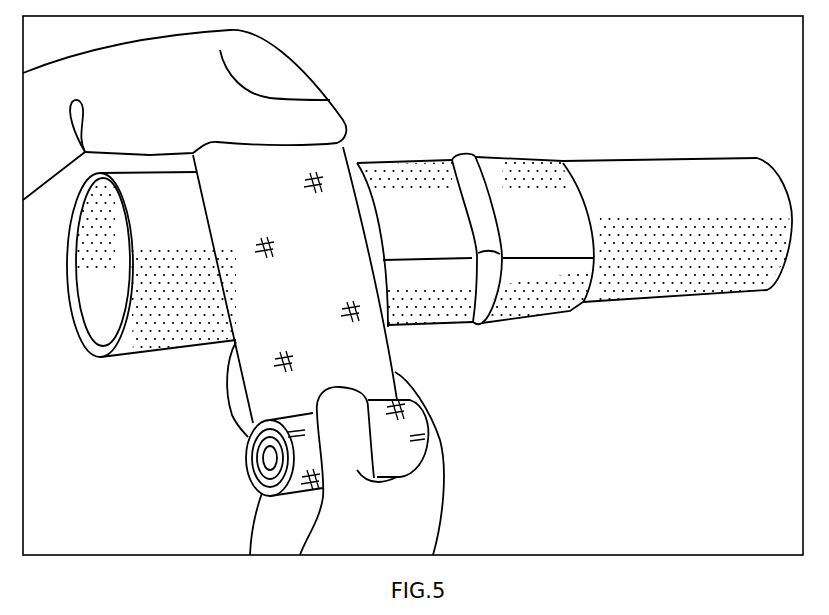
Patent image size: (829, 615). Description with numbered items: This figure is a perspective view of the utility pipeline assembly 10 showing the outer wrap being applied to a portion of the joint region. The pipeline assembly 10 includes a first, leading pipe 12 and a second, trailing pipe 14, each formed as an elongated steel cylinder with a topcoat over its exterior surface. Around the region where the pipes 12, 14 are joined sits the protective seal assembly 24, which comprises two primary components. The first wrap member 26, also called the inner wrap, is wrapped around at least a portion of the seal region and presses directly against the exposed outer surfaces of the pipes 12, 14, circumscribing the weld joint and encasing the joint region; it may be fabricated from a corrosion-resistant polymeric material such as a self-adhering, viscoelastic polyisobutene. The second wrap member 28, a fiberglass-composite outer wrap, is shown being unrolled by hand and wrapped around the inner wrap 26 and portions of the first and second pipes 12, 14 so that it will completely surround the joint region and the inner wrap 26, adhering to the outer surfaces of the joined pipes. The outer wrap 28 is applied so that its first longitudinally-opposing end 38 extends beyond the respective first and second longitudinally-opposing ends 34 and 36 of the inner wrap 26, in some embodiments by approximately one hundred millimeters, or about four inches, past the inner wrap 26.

The utility pipeline assembly 10 is at (429, 221).
The first pipe 12 is at (185, 347).
The second pipe 14 is at (650, 302).
The protective seal assembly 24 is at (440, 108).
The first wrap member 26 is at (523, 167).
The second wrap member 28 is at (367, 362).
The first longitudinally-opposing end of the inner wrap 34 is at (381, 176).
The second longitudinally-opposing end of the inner wrap 36 is at (563, 163).
The first longitudinally-opposing end of the outer wrap 38 is at (328, 155).